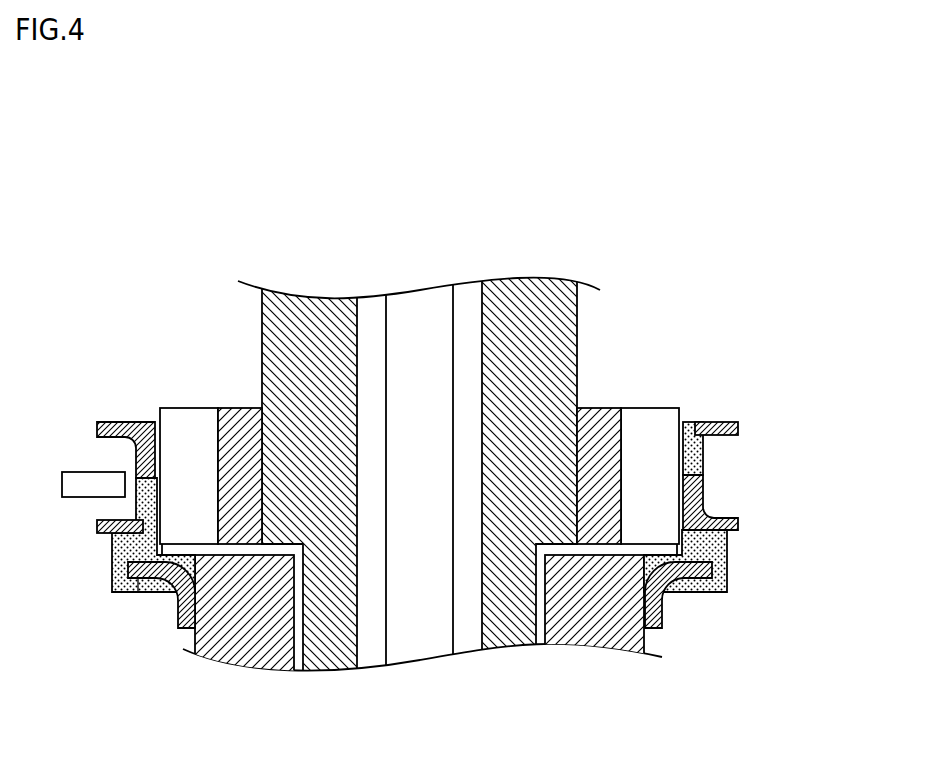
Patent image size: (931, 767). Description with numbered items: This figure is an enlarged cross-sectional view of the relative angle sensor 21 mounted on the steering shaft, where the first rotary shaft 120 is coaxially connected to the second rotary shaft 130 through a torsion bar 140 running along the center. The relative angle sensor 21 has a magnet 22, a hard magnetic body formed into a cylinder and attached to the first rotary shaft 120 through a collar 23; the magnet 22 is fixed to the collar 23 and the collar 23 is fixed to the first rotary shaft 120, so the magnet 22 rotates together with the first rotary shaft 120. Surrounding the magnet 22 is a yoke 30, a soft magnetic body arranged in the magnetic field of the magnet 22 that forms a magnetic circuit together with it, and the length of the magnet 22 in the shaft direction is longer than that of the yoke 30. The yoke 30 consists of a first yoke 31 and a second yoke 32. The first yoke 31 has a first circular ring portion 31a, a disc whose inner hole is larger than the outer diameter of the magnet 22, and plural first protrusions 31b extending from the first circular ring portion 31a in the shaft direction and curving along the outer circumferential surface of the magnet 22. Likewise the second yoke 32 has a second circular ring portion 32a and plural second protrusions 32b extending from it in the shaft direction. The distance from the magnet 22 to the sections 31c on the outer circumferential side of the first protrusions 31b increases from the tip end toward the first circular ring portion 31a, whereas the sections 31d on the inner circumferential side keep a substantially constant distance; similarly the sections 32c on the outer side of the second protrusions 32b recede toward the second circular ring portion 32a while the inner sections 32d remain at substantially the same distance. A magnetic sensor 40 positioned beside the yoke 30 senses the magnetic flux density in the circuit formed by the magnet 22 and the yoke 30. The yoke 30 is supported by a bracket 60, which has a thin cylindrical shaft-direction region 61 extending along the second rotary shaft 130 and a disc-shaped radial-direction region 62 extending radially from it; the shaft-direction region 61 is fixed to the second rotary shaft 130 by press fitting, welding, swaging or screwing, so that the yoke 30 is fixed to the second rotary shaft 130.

The relative angle sensor 21 is at (438, 470).
The magnet 22 is at (190, 407).
The collar 23 is at (240, 407).
The yoke 30 is at (453, 467).
The first yoke 31 is at (740, 427).
The first circular ring portion 31a is at (93, 408).
The first protrusions 31b is at (91, 446).
The sections on the outer circumferential side of the first protrusions 31c is at (155, 421).
The sections on the inner circumferential side of the first protrusions 31d is at (93, 422).
The second yoke 32 is at (464, 532).
The second circular ring portion 32a is at (108, 546).
The second protrusions 32b is at (448, 532).
The sections on the outer circumferential side of the second protrusions 32c is at (448, 535).
The sections on the inner circumferential side of the second protrusions 32d is at (707, 532).
The magnetic sensor 40 is at (72, 498).
The bracket 60 is at (391, 651).
The shaft-direction region 61 is at (391, 620).
The radial-direction region 62 is at (135, 594).
The first rotary shaft 120 is at (262, 322).
The second rotary shaft 130 is at (645, 636).
The torsion bar 140 is at (385, 320).